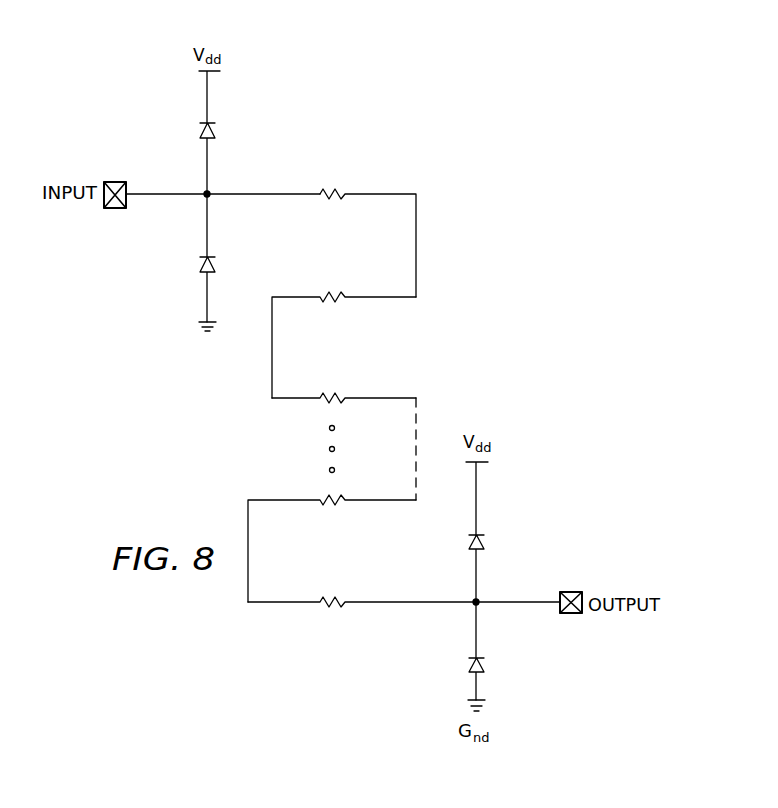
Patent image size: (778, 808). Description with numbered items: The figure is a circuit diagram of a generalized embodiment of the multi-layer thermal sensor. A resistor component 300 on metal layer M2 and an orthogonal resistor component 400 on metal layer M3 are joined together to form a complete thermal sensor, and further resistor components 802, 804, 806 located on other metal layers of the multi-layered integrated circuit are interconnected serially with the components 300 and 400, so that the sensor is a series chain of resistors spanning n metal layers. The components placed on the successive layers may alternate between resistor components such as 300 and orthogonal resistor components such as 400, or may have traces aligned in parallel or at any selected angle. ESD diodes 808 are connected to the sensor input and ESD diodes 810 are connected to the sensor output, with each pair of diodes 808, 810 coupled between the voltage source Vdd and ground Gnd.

The resistor component 300 is at (333, 190).
The orthogonal resistor component 400 is at (334, 293).
The resistor component 802 is at (334, 394).
The resistor component 804 is at (331, 504).
The resistor component 806 is at (332, 606).
The ESD diodes 808 is at (203, 124).
The ESD diodes 810 is at (483, 535).